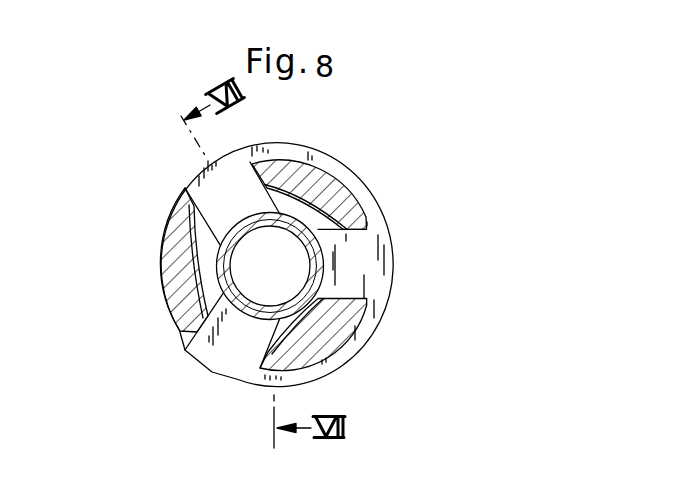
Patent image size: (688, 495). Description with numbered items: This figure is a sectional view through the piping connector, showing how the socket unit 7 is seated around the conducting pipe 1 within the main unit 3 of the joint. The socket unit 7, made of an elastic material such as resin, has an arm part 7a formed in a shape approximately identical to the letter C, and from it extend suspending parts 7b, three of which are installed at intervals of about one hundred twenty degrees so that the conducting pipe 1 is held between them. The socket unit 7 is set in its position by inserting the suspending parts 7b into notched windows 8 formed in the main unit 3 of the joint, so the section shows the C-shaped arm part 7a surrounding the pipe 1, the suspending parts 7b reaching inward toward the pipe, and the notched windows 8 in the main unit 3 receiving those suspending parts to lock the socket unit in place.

The conducting pipe 1 is at (323, 169).
The main unit of a joint 3 is at (170, 282).
The socket unit 7 is at (210, 370).
The arm part 7a is at (287, 157).
The suspending parts 7b is at (225, 212).
The notched windows 8 is at (357, 197).